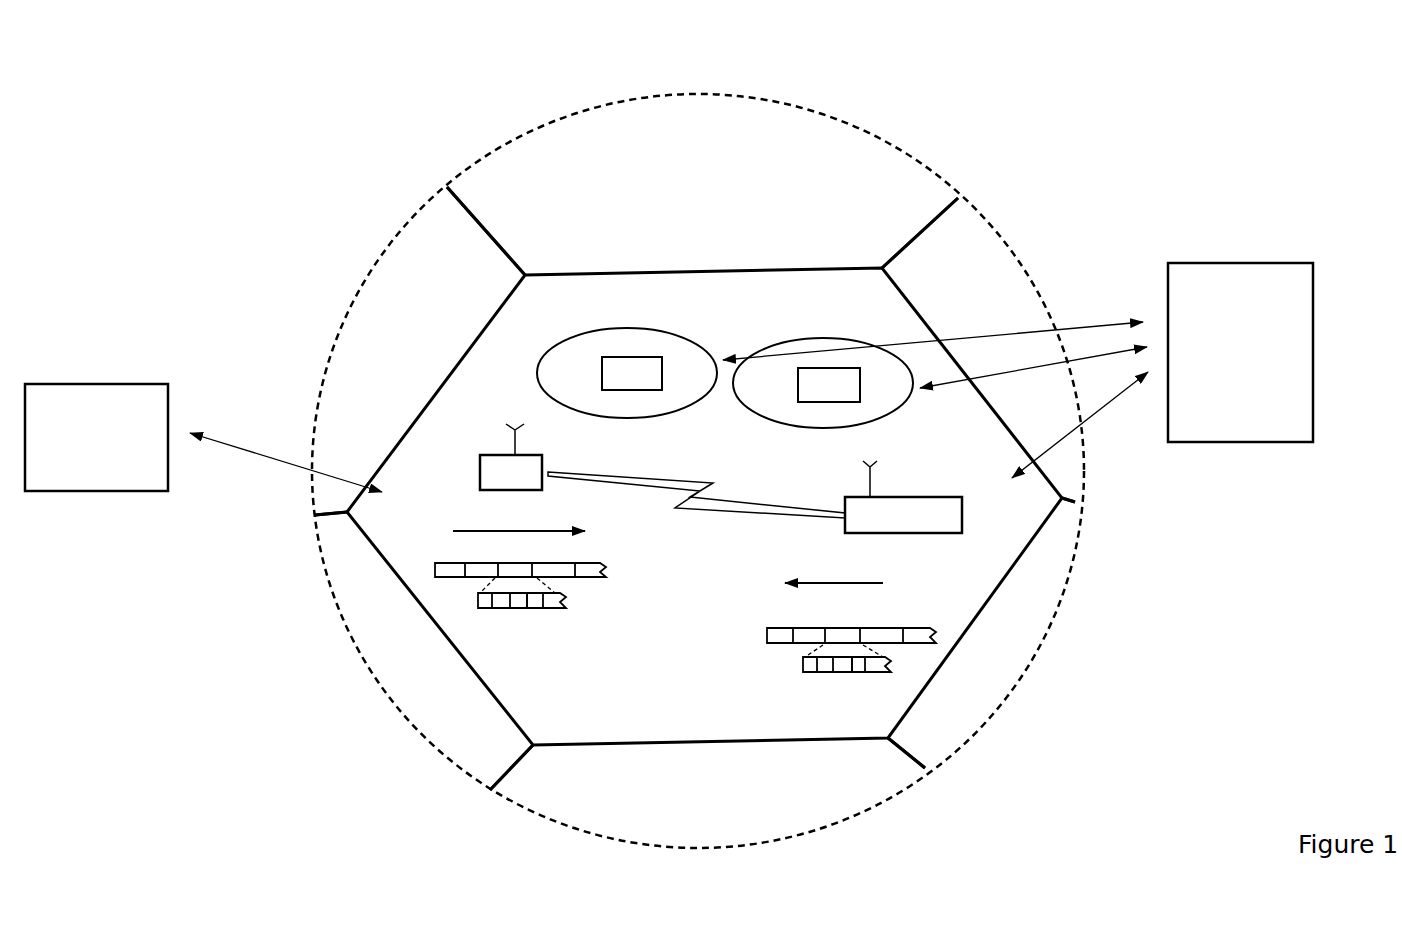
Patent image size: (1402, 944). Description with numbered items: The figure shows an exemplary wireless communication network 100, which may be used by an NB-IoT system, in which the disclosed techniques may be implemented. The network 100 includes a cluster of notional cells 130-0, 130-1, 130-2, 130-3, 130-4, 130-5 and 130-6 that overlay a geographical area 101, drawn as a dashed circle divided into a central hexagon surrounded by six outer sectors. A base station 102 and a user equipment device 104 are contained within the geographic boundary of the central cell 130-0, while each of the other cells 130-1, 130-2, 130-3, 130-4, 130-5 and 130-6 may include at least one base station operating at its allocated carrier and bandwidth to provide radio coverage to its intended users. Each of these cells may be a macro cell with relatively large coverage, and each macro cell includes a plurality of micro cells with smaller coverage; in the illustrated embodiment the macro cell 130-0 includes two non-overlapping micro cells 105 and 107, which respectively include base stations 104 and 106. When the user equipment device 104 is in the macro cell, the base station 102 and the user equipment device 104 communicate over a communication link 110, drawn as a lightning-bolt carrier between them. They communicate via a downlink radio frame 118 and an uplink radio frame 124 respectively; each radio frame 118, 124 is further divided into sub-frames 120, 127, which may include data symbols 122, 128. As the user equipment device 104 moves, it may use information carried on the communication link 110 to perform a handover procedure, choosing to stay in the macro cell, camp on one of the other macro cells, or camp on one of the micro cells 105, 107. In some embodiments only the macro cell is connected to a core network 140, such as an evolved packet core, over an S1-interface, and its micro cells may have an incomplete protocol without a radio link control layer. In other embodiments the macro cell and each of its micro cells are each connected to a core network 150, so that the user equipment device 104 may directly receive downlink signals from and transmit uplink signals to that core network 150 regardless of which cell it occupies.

The wireless communication network 100 is at (637, 60).
The geographical area 101 is at (840, 117).
The base station 102 is at (480, 468).
The user equipment device 104 is at (968, 472).
The micro cell 105 is at (627, 335).
The base station 106 is at (829, 385).
The micro cell 107 is at (823, 347).
The communication link 110 is at (690, 475).
The downlink radio frame 118 is at (435, 570).
The sub-frame 120 is at (478, 600).
The data symbol 122 is at (537, 600).
The uplink radio frame 124 is at (907, 620).
The sub-frame 127 is at (802, 668).
The data symbol 128 is at (872, 662).
The cell 130-0 is at (563, 325).
The cell 130-1 is at (405, 242).
The cell 130-2 is at (538, 145).
The cell 130-3 is at (980, 262).
The cell 130-4 is at (955, 722).
The cell 130-5 is at (582, 802).
The cell 130-6 is at (412, 698).
The core network 140 is at (203, 438).
The core network 150 is at (1018, 370).